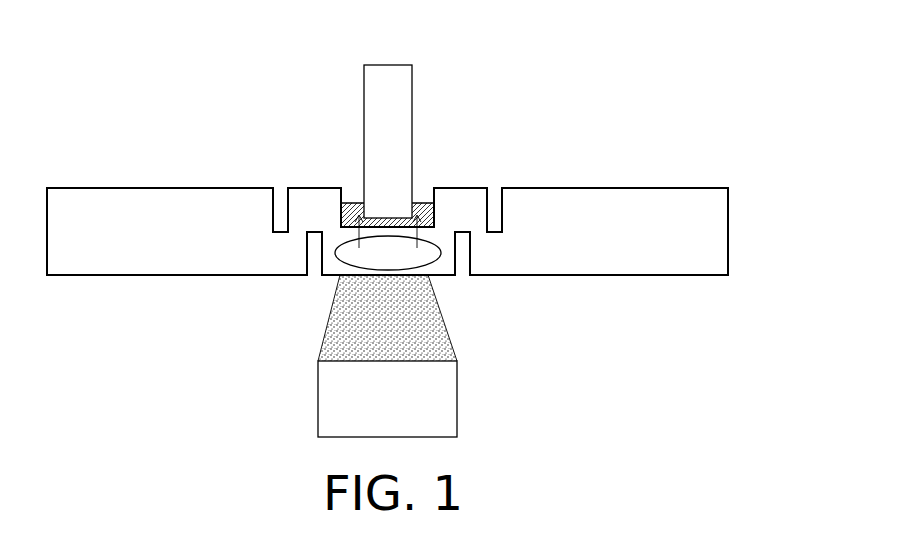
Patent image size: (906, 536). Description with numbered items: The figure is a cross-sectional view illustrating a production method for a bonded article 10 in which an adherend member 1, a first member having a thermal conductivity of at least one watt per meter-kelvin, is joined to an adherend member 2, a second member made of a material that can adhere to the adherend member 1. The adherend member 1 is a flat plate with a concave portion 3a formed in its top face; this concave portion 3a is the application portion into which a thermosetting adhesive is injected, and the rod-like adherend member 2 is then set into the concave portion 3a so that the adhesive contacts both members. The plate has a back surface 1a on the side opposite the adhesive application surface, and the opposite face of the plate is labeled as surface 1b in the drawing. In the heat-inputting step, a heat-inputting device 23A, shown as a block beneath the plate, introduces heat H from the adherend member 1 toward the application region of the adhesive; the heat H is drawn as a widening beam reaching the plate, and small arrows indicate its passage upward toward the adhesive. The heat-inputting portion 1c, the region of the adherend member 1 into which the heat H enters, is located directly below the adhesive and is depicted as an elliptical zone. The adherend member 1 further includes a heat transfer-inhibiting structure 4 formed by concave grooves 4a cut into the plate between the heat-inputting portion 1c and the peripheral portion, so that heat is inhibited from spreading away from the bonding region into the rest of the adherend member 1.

The bonded article 10 is at (748, 82).
The adherend member 1 is at (680, 188).
The back surface 1a is at (625, 187).
The lower surface of plate 1b is at (620, 276).
The heat-inputting portion 1c is at (353, 257).
The adherend member 2 is at (390, 72).
The concave portion 3a is at (350, 192).
The heat transfer-inhibiting structure 4 is at (505, 176).
The concave grooves 4a is at (276, 193).
The heat H is at (437, 320).
The heat-inputting device 23A is at (457, 410).